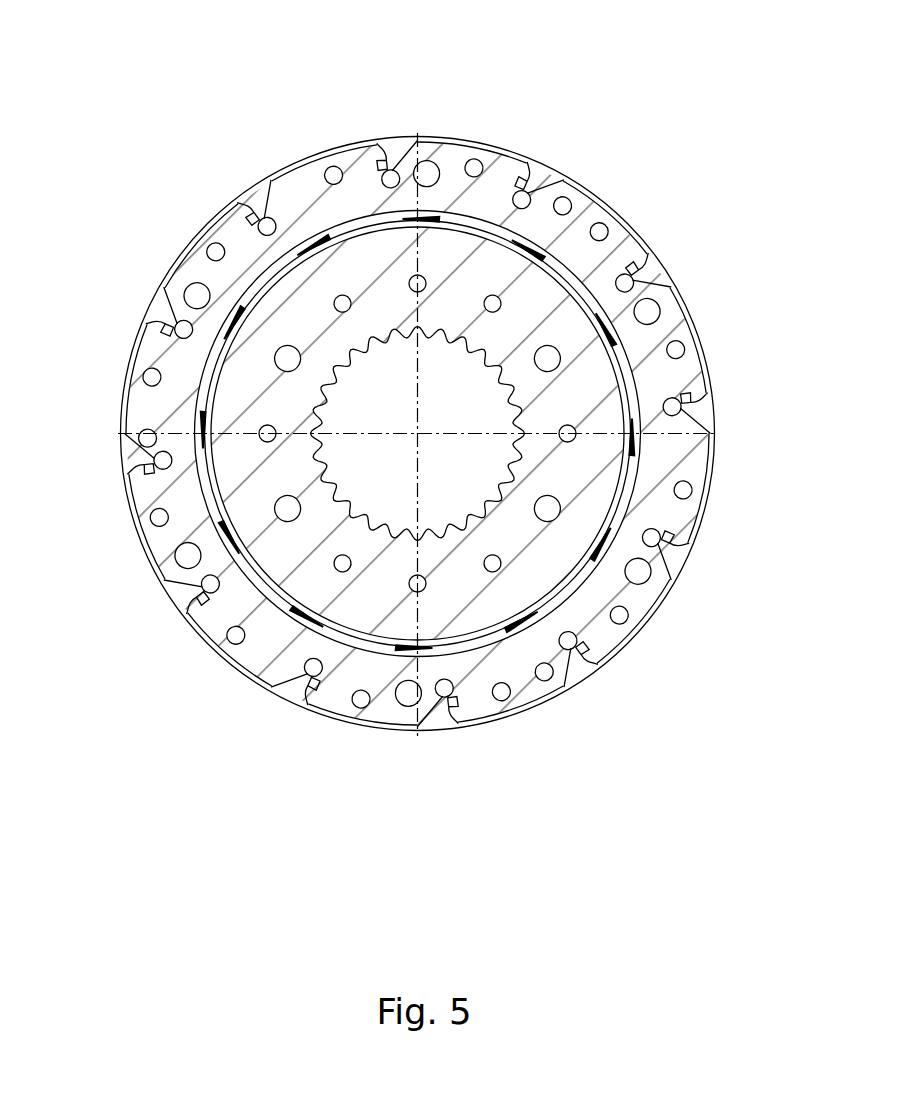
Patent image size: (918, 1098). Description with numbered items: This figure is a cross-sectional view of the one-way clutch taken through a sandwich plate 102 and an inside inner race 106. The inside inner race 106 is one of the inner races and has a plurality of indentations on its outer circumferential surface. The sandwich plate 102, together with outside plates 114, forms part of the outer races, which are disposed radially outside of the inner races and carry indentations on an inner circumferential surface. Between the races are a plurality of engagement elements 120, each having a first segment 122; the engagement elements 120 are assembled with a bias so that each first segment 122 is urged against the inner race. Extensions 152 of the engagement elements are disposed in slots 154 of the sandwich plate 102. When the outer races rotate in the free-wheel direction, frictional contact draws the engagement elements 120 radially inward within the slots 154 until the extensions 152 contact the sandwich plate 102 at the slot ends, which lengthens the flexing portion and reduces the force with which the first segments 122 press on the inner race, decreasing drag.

The sandwich plate 102 is at (236, 229).
The inside inner race 106 is at (244, 515).
The outside plate 114 is at (516, 152).
The engagement element 120 is at (439, 196).
The first segment 122 is at (182, 326).
The extension 152 is at (668, 272).
The slot 154 is at (709, 412).